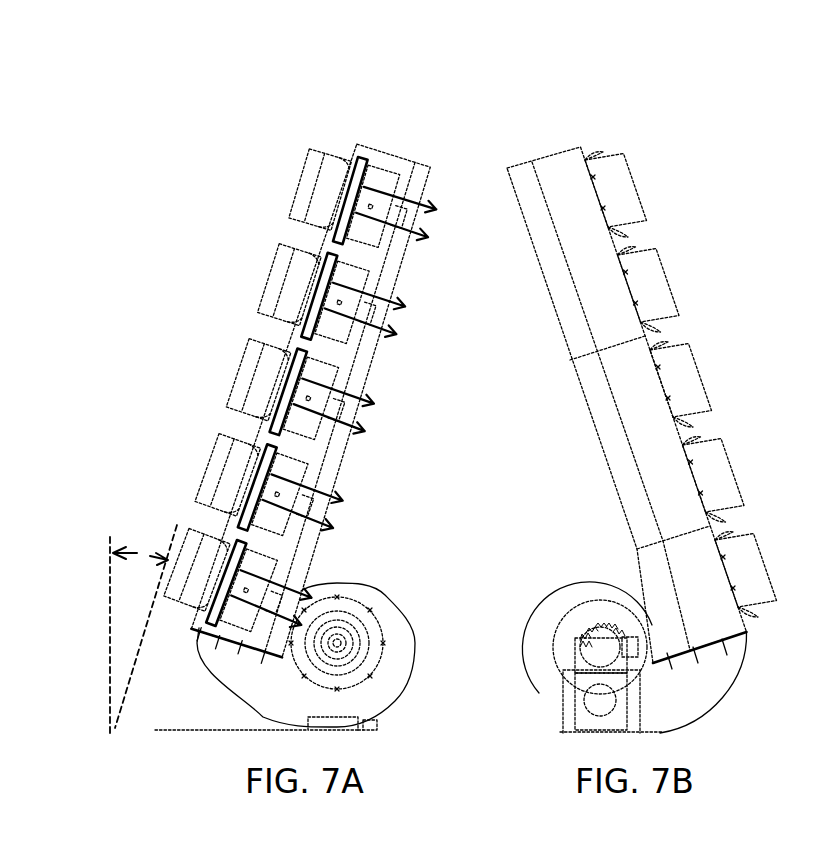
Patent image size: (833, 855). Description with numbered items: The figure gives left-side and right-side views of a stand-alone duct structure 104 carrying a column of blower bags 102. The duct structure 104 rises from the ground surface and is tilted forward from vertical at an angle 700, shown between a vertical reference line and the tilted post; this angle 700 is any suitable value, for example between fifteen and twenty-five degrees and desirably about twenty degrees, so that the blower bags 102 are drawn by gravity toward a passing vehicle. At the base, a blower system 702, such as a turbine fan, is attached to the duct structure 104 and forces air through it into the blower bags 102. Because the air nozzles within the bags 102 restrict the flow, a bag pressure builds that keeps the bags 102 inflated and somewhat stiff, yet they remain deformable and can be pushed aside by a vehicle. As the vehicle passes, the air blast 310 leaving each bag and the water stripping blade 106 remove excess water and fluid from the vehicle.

In FIG. 7A, the blower bag 102 is at (315, 187).
In FIG. 7B, the blower bag 102 is at (618, 197).
In FIG. 7A, the duct structure 104 is at (340, 455).
In FIG. 7B, the duct structure 104 is at (563, 305).
In FIG. 7A, the water stripping blade 106 is at (287, 398).
In FIG. 7A, the air blast 310 is at (347, 392).
In FIG. 7A, the angle 700 is at (147, 557).
In FIG. 7A, the blower system 702 is at (397, 628).
In FIG. 7B, the blower system 702 is at (543, 607).